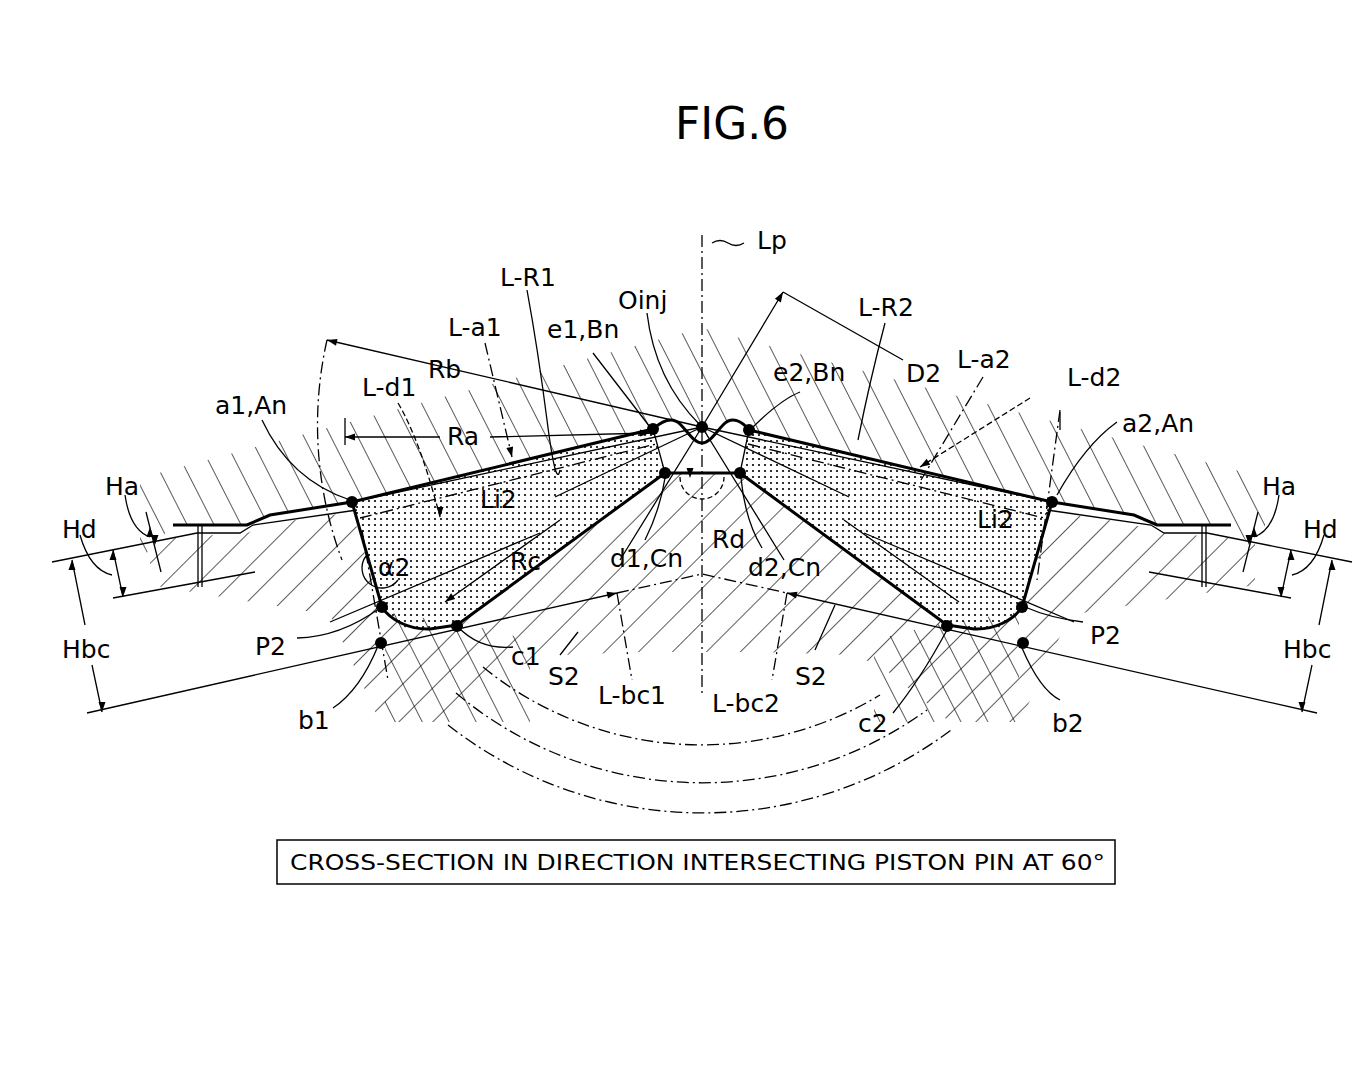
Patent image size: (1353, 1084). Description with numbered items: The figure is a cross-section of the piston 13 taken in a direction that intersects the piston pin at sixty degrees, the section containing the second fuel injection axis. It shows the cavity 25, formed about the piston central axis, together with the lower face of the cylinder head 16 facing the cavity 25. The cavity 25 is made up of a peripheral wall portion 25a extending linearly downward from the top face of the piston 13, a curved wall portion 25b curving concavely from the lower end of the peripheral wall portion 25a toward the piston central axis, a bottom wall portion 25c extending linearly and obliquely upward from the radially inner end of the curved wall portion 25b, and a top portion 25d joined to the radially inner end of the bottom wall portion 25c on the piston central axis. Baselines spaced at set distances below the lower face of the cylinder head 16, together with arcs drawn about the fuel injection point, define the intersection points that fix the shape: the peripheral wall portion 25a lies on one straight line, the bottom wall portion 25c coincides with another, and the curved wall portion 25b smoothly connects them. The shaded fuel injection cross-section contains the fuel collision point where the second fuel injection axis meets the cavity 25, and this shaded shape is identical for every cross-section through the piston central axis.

The piston 13 is at (1177, 567).
The cylinder head 16 is at (1190, 480).
The cavity 25 is at (1035, 590).
The peripheral wall portion 25a is at (313, 560).
The curved wall portion 25b is at (433, 634).
The bottom wall portion 25c is at (632, 560).
The top portion 25d is at (745, 460).